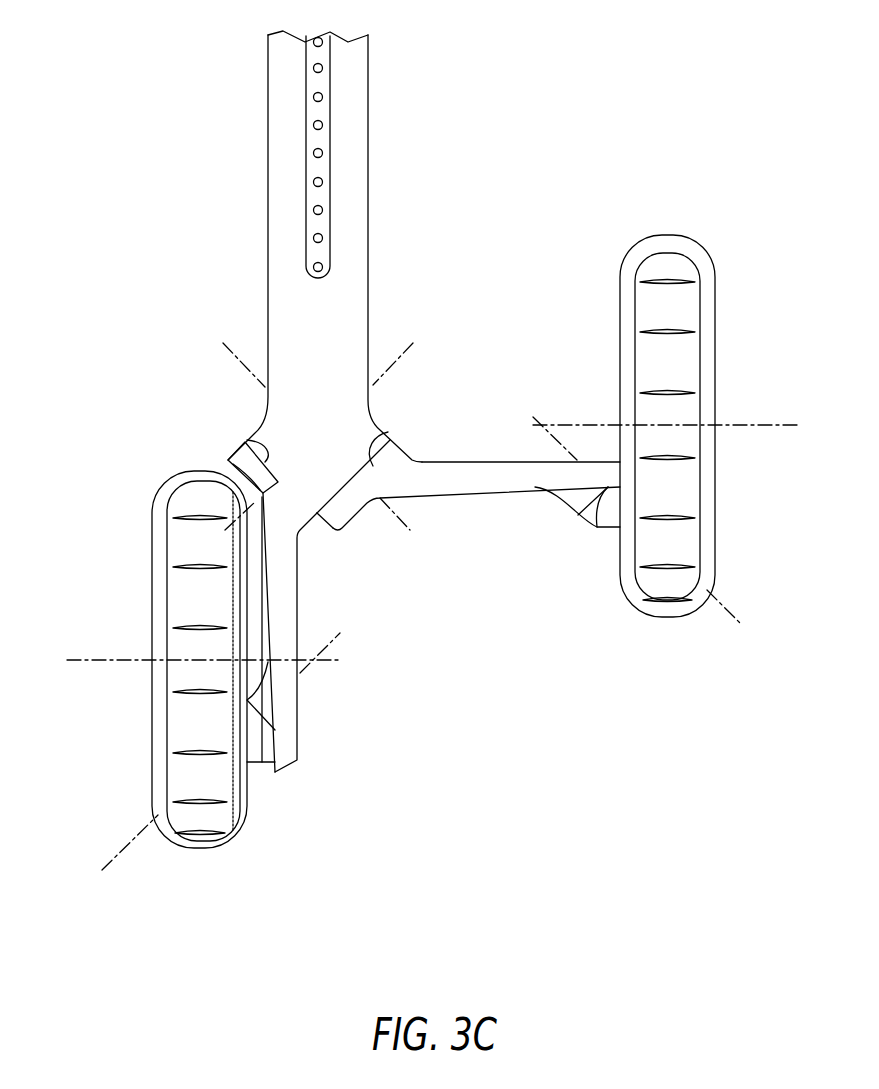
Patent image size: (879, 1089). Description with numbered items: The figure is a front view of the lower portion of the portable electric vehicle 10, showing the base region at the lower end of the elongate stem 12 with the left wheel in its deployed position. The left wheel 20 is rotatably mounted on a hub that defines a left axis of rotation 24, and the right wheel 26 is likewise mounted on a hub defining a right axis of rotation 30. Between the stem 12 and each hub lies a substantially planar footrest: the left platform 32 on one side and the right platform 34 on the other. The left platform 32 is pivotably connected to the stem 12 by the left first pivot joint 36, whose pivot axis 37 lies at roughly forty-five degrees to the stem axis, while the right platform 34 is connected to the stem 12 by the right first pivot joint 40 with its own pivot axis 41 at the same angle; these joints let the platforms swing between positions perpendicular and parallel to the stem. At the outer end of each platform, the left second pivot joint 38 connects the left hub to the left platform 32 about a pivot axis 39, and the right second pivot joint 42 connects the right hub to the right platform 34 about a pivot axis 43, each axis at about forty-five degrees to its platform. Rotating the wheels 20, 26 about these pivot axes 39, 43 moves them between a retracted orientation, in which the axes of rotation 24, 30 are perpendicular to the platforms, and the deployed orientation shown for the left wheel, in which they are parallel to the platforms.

The portable electric vehicle 10 is at (547, 74).
The elongate stem 12 is at (369, 136).
The left wheel 20 is at (715, 330).
The left axis of rotation 24 is at (762, 423).
The right wheel 26 is at (153, 718).
The right axis of rotation 30 is at (82, 658).
The left platform 32 is at (460, 459).
The right platform 34 is at (298, 707).
The left first pivot joint 36 is at (380, 430).
The pivot axis of left first pivot joint 37 is at (398, 520).
The left second pivot joint 38 is at (596, 530).
The pivot axis of left second pivot joint 39 is at (733, 613).
The right first pivot joint 40 is at (255, 433).
The pivot axis of right first pivot joint 41 is at (238, 448).
The right second pivot joint 42 is at (262, 772).
The pivot axis of right second pivot joint 43 is at (340, 634).